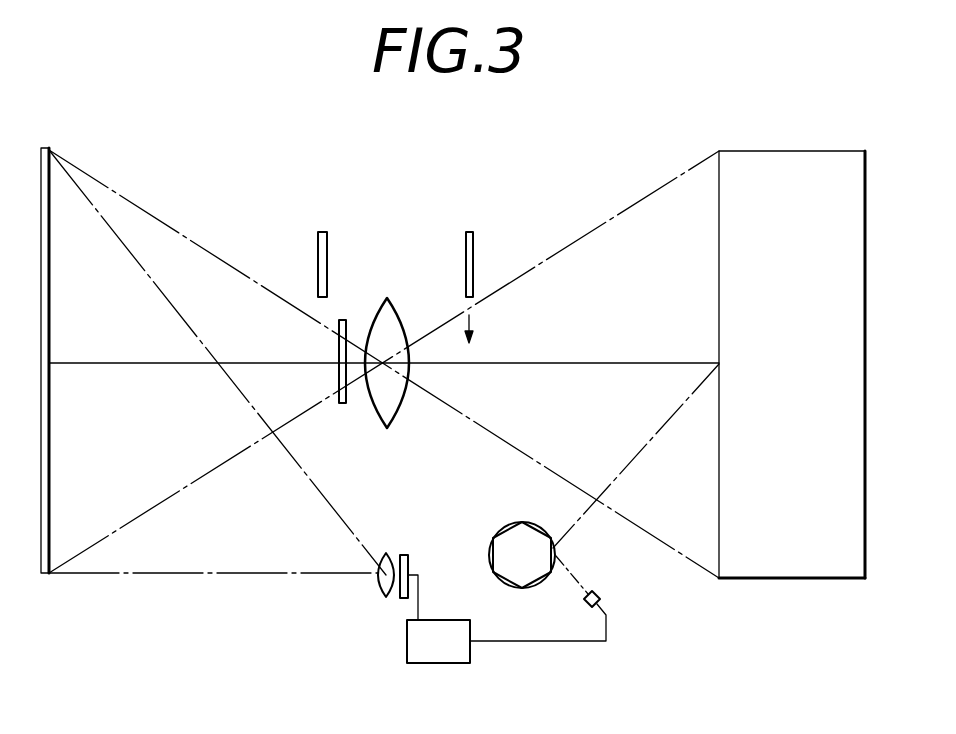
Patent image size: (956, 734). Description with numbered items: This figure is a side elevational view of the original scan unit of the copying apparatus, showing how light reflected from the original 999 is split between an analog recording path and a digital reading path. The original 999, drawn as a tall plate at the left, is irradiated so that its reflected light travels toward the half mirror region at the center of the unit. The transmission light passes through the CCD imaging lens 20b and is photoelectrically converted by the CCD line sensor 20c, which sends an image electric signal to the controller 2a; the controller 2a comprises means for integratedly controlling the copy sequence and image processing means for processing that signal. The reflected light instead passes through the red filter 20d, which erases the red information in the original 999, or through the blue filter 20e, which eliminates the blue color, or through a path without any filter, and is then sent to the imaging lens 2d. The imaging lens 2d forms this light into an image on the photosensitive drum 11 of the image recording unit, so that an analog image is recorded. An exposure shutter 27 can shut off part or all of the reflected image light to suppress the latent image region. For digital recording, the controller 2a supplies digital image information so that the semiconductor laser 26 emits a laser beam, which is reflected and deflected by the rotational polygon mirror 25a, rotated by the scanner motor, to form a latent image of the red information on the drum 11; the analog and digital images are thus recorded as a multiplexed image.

The original 999 is at (49, 147).
The photosensitive drum 11 is at (823, 150).
The blue filter 20e is at (321, 230).
The red filter 20d is at (343, 318).
The imaging lens 2d is at (396, 312).
The exposure shutter 27 is at (472, 231).
The rotational polygon mirror 25a is at (506, 525).
The semiconductor laser 26 is at (601, 598).
The CCD imaging lens 20b is at (382, 552).
The CCD line sensor 20c is at (407, 557).
The controller 2a is at (407, 648).